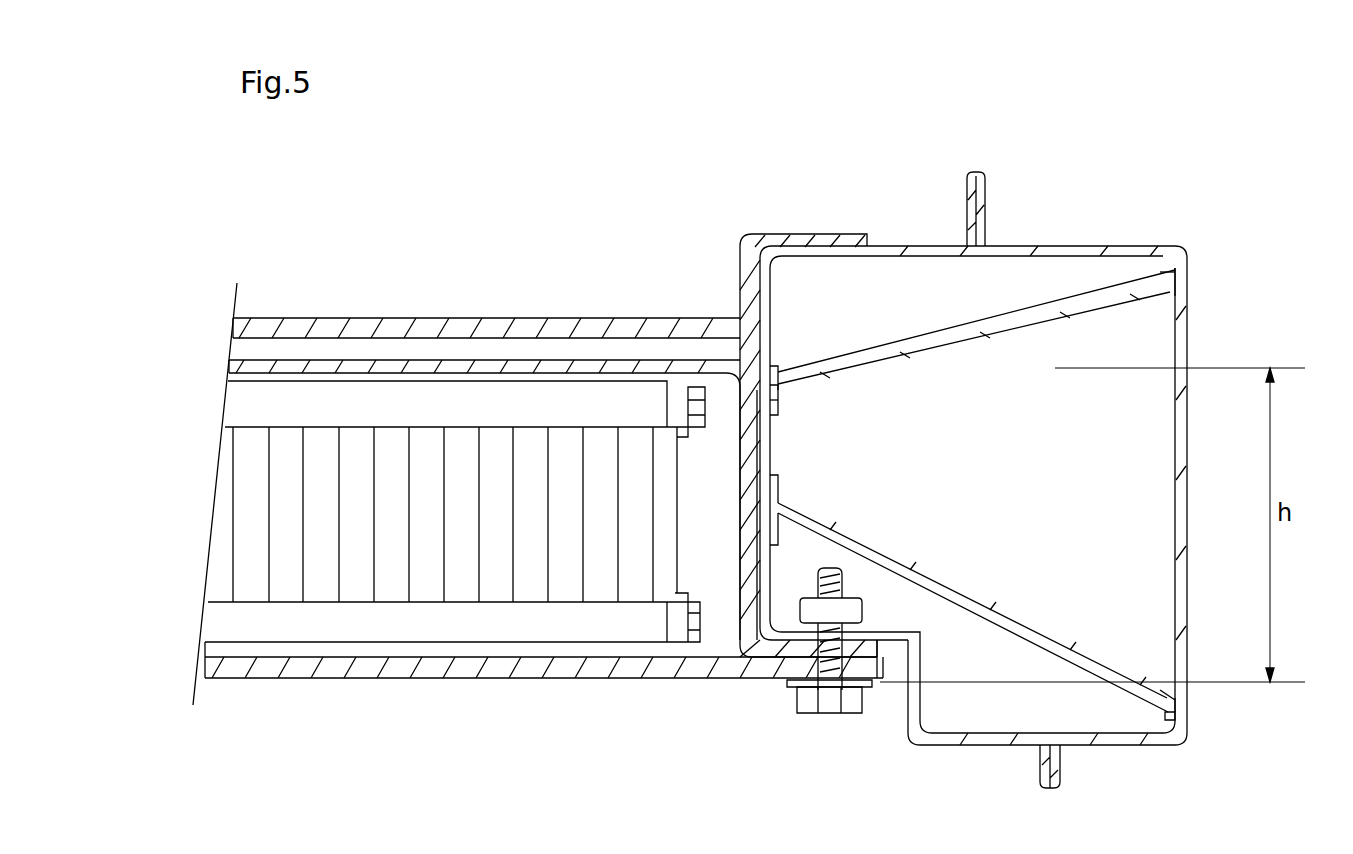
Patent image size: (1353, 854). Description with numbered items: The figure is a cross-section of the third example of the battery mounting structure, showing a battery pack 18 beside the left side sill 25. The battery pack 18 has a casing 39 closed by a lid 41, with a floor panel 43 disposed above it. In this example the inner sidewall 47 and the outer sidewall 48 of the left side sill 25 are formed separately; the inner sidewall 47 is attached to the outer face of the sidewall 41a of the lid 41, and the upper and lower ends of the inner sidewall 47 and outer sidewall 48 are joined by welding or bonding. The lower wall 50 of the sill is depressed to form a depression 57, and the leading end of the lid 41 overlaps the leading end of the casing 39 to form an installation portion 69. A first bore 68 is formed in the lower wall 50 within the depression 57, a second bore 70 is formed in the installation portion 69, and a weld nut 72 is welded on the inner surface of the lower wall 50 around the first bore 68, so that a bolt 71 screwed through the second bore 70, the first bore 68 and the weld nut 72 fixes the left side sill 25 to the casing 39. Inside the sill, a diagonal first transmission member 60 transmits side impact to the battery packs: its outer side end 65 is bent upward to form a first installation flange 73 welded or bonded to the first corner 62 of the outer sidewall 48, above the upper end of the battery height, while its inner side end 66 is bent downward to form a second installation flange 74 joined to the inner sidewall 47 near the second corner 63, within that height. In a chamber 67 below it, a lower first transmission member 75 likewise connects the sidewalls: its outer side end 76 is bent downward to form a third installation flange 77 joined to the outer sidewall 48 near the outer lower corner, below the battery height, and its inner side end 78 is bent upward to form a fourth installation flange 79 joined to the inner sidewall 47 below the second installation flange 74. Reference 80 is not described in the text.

The battery pack 18 is at (520, 692).
The left side sill 25 is at (978, 471).
The casing 39 is at (308, 680).
The lid 41 is at (518, 356).
The sidewall of the lid 41a is at (748, 548).
The floor panel 43 is at (822, 240).
The inner sidewall 47 is at (745, 322).
The outer sidewall 48 is at (1176, 500).
The lower wall 50 is at (974, 747).
The depression 57 is at (905, 747).
The first transmission member 60 is at (1020, 320).
The first corner 62 is at (1180, 247).
The second corner 63 is at (780, 372).
The outer side end 65 is at (1188, 285).
The inner side end 66 is at (790, 384).
The chamber 67 is at (1165, 441).
The first bore 68 is at (878, 660).
The installation portion 69 is at (730, 680).
The second bore 70 is at (826, 690).
The bolt 71 is at (852, 714).
The weld nut 72 is at (865, 606).
The first installation flange 73 is at (1170, 270).
The second installation flange 74 is at (785, 400).
The lower first transmission member 75 is at (960, 590).
The outer side end 76 is at (1162, 695).
The third installation flange 77 is at (1164, 716).
The inner side end 78 is at (778, 525).
The fourth installation flange 79 is at (780, 490).
The recess 80 is at (1188, 700).